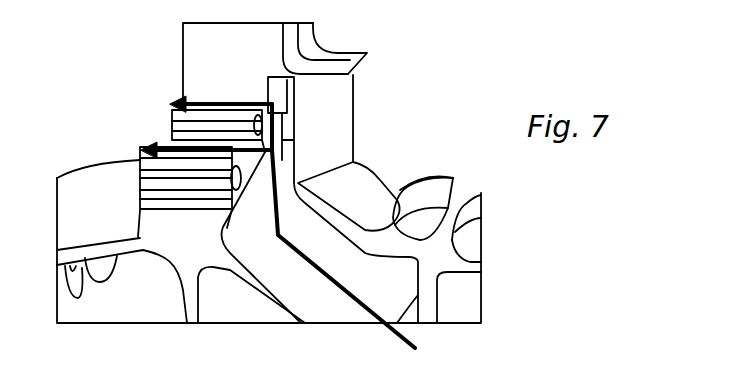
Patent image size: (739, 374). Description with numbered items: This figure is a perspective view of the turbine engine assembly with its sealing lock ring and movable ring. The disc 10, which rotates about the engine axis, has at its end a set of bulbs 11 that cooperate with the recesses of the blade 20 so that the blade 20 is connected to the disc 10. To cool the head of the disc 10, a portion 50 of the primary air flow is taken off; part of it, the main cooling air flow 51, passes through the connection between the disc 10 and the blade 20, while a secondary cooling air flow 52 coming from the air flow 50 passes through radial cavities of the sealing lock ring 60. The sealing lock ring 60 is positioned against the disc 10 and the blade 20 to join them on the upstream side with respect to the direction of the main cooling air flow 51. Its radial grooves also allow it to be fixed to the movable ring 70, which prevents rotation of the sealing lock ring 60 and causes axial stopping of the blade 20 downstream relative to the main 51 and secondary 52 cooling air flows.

The disc 10 is at (125, 178).
The bulbs 11 is at (155, 170).
The blade 20 is at (200, 45).
The portion of the primary air flow 50 is at (370, 308).
The main cooling air flow 51 is at (168, 124).
The secondary cooling air flow 52 is at (211, 99).
The sealing lock ring 60 is at (277, 95).
The movable ring 70 is at (328, 150).